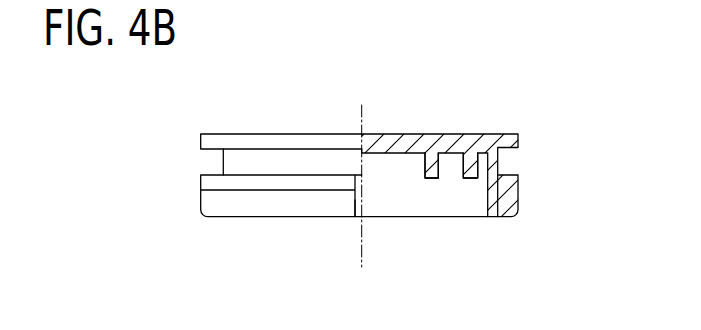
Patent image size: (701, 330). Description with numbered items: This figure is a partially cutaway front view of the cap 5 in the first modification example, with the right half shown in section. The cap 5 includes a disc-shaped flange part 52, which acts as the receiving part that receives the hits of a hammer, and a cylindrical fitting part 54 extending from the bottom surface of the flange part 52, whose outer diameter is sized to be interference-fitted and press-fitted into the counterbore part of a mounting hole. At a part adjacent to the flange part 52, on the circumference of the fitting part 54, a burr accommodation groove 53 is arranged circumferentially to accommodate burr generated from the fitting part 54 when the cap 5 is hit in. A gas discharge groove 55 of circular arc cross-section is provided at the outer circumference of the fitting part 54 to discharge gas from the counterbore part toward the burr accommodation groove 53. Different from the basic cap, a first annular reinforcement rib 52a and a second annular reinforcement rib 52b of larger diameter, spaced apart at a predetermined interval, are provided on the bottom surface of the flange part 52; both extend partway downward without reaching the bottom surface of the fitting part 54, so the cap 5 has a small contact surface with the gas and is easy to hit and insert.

The cap 5 is at (416, 150).
The flange part 52 is at (274, 133).
The first annular reinforcement rib 52a is at (432, 176).
The second annular reinforcement rib 52b is at (470, 176).
The burr accommodation groove 53 is at (232, 161).
The fitting part 54 is at (209, 184).
The gas discharge groove 55 is at (357, 207).